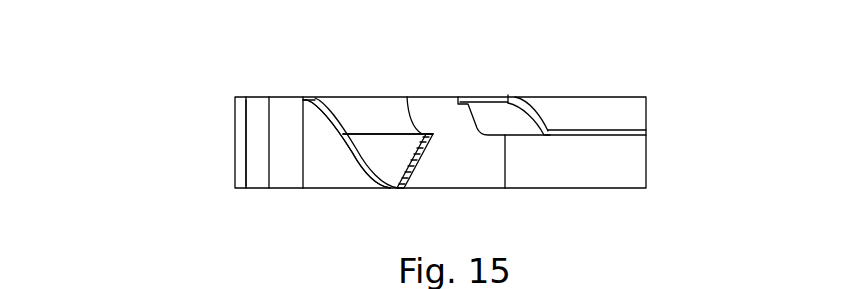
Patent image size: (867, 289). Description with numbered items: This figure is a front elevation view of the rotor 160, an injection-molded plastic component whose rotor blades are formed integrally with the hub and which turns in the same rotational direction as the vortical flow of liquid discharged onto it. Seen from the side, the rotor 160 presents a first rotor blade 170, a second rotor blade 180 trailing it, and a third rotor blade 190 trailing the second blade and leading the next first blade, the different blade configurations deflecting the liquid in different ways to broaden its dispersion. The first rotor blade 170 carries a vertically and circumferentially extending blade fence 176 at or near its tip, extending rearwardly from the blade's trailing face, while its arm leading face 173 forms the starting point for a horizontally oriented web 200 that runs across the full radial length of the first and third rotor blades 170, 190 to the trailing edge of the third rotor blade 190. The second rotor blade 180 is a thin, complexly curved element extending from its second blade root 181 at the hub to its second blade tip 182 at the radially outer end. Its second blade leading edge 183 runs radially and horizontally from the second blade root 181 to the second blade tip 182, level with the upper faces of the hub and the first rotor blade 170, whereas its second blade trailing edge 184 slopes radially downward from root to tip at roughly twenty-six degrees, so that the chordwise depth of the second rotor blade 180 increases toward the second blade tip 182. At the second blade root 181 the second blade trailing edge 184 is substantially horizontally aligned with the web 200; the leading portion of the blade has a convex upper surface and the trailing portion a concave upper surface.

The rotor 160 is at (146, 52).
The first rotor blade 170 is at (247, 199).
The arm leading face 173 is at (583, 175).
The blade fence 176 is at (247, 150).
The second rotor blade 180 is at (356, 87).
The second blade root 181 is at (423, 98).
The second blade tip 182 is at (350, 157).
The second blade leading edge 183 is at (292, 97).
The second blade trailing edge 184 is at (415, 172).
The third rotor blade 190 is at (499, 81).
The web 200 is at (595, 123).